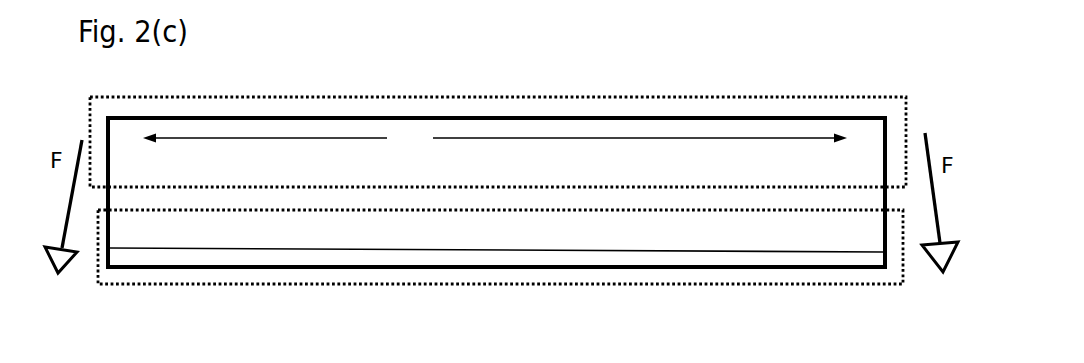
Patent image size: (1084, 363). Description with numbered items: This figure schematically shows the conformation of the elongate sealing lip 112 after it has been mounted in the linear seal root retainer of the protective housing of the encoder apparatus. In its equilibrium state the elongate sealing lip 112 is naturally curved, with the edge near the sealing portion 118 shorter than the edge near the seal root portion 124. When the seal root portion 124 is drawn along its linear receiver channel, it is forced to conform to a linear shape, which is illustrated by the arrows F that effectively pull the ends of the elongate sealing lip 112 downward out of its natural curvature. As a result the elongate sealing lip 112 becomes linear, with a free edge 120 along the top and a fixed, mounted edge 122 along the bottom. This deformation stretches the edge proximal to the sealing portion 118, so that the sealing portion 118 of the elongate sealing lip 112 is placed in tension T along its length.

The elongate sealing lip 112 is at (588, 165).
The sealing portion 118 is at (830, 97).
The free edge 120 is at (304, 118).
The fixed edge 122 is at (470, 268).
The seal root portion 124 is at (222, 284).